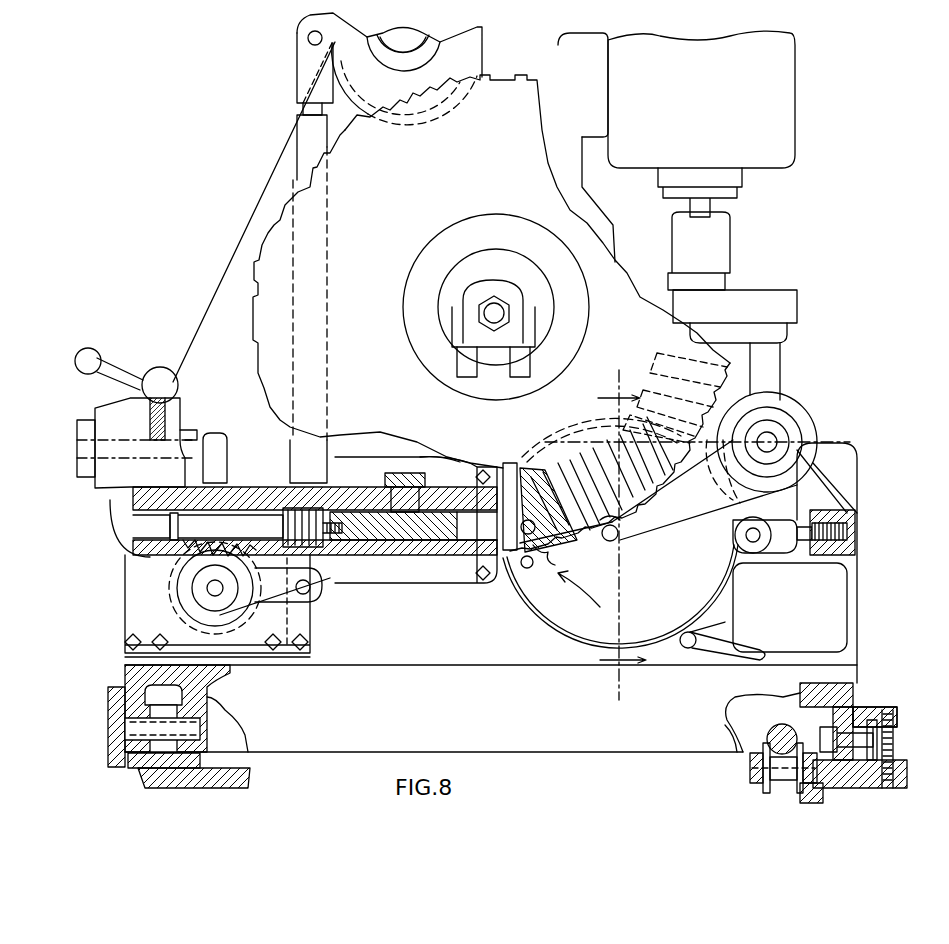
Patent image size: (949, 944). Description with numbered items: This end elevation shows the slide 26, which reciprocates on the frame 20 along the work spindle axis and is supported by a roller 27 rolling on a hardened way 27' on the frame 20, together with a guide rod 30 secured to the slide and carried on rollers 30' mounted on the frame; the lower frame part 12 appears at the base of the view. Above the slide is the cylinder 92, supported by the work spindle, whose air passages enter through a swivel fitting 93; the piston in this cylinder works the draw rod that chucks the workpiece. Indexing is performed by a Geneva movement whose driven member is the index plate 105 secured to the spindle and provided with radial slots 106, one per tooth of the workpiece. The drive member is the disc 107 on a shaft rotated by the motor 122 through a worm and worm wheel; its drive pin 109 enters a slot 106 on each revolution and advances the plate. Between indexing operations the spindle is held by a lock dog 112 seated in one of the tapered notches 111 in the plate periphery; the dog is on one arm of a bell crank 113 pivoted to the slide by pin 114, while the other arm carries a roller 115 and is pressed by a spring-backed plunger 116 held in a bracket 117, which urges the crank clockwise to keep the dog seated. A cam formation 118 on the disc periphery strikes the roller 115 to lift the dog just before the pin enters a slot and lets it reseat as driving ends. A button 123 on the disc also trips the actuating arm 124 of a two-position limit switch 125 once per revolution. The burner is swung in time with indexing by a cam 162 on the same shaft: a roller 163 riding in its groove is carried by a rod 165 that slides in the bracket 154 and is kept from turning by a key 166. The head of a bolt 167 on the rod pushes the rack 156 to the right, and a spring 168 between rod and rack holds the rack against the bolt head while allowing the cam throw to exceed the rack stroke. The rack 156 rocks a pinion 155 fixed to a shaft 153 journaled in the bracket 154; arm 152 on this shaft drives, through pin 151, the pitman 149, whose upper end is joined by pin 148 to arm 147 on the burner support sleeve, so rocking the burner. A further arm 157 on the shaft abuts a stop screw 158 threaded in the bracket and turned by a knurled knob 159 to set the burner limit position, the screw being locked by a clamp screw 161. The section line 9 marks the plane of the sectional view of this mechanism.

The section line 9- 9 is at (697, 535).
The frame base 12 is at (712, 668).
The frame 20 is at (222, 788).
The slide 26 is at (393, 716).
The roller 27 is at (172, 716).
The hardened way 27' is at (207, 755).
The guide rod 30 is at (822, 721).
The rollers 30' is at (760, 773).
The cylinder 92 is at (440, 233).
The swivel fitting 93 is at (500, 292).
The index plate 105 is at (392, 330).
The radial slots 106 is at (555, 553).
The disc 107 is at (573, 612).
The drive pin 109 is at (526, 569).
The tapered notches 111 is at (628, 518).
The lock dog 112 is at (620, 540).
The bell crank 113 is at (712, 518).
The pin 114 is at (767, 442).
The roller 115 is at (751, 553).
The spring-backed plunger 116 is at (805, 540).
The bracket 117 is at (850, 525).
The cam formation 118 is at (730, 490).
The motor 122 is at (780, 135).
The button 123 is at (717, 618).
The actuating arm 124 is at (688, 647).
The two-position limit switch 125 is at (812, 626).
The arm 147 is at (327, 58).
The pin 148 is at (310, 42).
The pitman 149 is at (300, 148).
The pin 151 is at (312, 592).
The arm 152 is at (268, 600).
The shaft 153 is at (207, 592).
The bracket 154 is at (385, 580).
The pinion 155 is at (200, 548).
The rack 156 is at (175, 525).
The arm 157 is at (215, 450).
The stop screw 158 is at (185, 438).
The knurled knob 159 is at (78, 450).
The clamp screw 161 is at (172, 415).
The cam 162 is at (533, 618).
The roller 163 is at (528, 472).
The rod 165 is at (440, 578).
The key 166 is at (425, 453).
The bolt 167 is at (135, 520).
The spring 168 is at (330, 475).